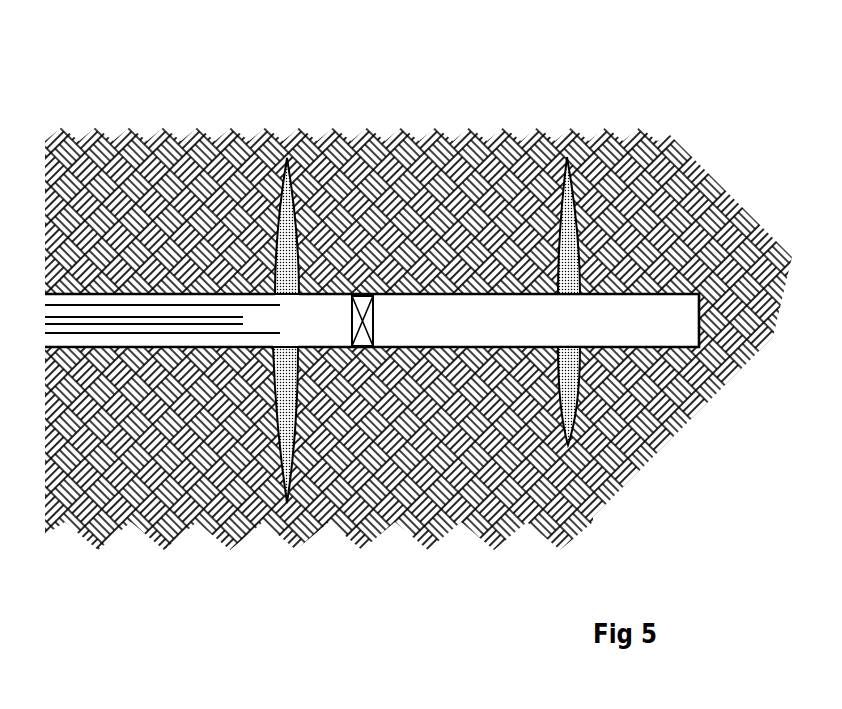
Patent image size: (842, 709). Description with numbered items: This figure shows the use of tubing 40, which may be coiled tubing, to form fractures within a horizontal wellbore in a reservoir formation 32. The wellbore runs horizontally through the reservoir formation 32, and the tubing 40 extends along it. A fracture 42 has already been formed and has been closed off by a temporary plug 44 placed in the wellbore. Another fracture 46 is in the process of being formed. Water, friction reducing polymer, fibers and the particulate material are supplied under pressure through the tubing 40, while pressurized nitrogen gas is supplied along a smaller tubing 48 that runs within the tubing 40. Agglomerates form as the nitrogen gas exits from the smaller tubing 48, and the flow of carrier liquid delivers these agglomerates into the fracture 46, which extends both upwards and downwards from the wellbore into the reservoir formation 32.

The reservoir formation 32 is at (641, 215).
The tubing 40 is at (184, 305).
The fracture 42 is at (573, 273).
The temporary plug 44 is at (365, 293).
The fracture 46 is at (288, 237).
The smaller tubing 48 is at (100, 317).